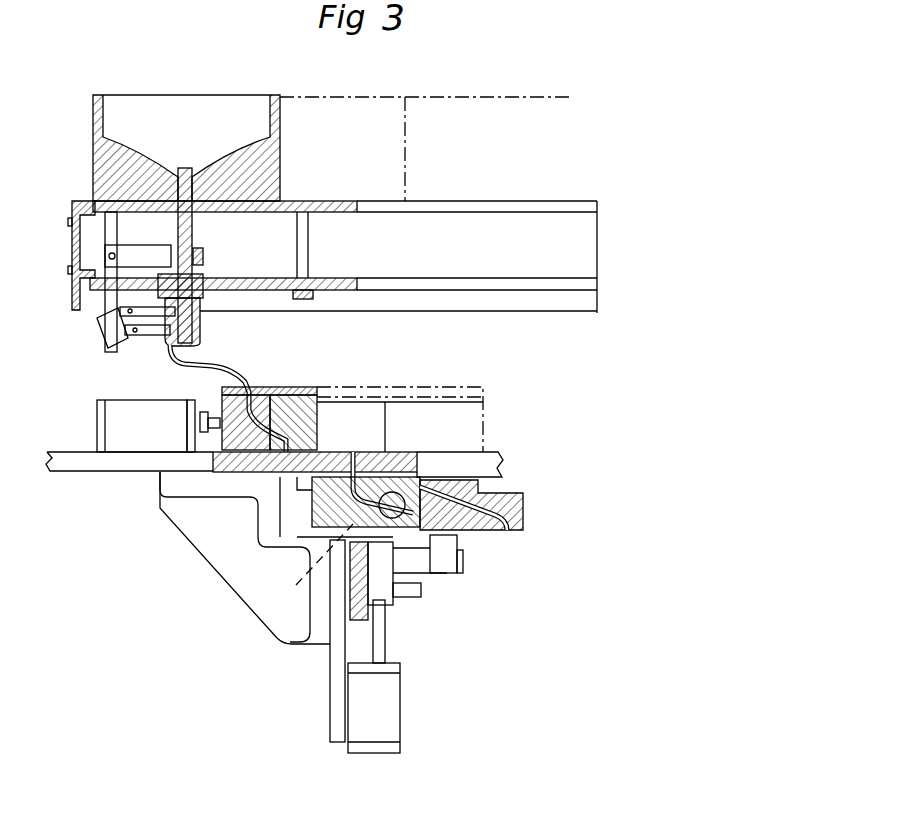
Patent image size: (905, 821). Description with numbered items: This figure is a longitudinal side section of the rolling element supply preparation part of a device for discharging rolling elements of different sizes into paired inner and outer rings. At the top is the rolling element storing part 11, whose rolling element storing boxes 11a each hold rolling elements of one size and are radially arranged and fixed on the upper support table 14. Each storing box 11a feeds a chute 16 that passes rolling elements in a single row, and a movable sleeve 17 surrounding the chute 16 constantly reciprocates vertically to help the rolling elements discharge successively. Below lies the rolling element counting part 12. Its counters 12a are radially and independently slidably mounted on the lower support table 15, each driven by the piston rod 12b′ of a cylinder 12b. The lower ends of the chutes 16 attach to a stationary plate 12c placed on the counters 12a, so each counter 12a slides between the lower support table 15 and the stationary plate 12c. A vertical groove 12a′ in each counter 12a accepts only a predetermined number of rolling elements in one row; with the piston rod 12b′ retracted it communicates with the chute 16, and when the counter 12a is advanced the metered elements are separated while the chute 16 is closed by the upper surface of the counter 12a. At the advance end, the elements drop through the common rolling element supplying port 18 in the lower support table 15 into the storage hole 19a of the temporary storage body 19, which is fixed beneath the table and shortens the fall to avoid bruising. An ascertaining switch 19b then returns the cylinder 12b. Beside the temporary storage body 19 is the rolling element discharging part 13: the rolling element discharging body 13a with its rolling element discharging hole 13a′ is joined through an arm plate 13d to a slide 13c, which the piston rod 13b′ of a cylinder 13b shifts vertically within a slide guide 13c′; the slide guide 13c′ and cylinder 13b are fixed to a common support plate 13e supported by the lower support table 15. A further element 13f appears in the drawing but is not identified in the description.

The rolling element storing part 11 is at (62, 120).
The rolling element storing box 11a is at (112, 105).
The upper support table 14 is at (515, 207).
The movable sleeve 17 is at (194, 230).
The chute 16 is at (230, 367).
The rolling element counting part 12 is at (520, 453).
The lower support table 15 is at (62, 452).
The cylinder 12b is at (123, 405).
The piston rod 12b′ is at (197, 410).
The stationary plate 12c is at (275, 390).
The counter 12a is at (303, 408).
The vertical groove 12a′ is at (262, 422).
The rolling element supplying port 18 is at (354, 451).
The temporary storage body 19 is at (325, 502).
The storage hole 19a is at (363, 500).
The ascertaining switch 19b is at (305, 582).
The rolling element discharging part 13 is at (498, 573).
The rolling element discharging body 13a is at (523, 508).
The rolling element discharging hole 13a′ is at (510, 530).
The common support plate 13e is at (333, 716).
The slide 13c is at (383, 590).
The arm plate 13d is at (447, 570).
The piston rod 13b′ is at (382, 647).
The cylinder 13b is at (392, 718).
The pivot axis 13f is at (273, 626).
The slide guide 13c′ is at (358, 588).